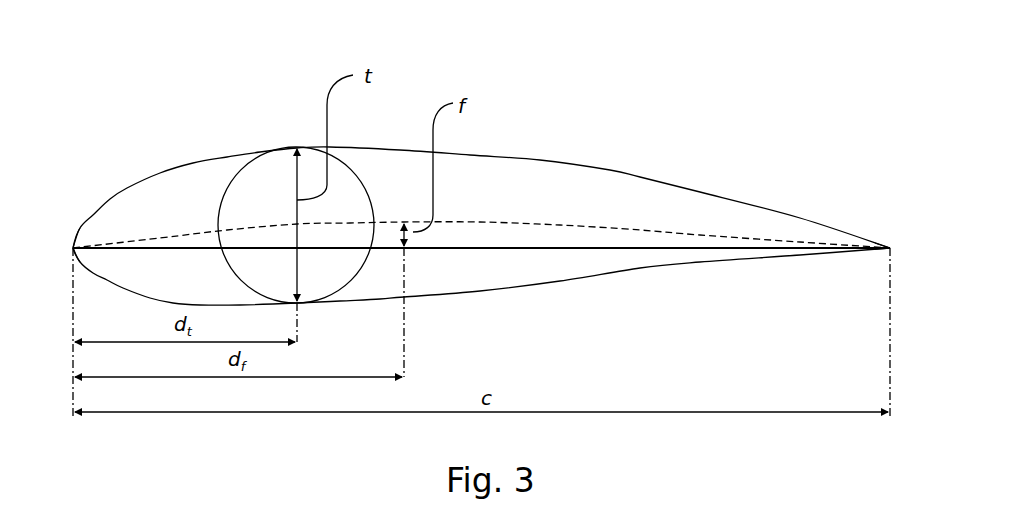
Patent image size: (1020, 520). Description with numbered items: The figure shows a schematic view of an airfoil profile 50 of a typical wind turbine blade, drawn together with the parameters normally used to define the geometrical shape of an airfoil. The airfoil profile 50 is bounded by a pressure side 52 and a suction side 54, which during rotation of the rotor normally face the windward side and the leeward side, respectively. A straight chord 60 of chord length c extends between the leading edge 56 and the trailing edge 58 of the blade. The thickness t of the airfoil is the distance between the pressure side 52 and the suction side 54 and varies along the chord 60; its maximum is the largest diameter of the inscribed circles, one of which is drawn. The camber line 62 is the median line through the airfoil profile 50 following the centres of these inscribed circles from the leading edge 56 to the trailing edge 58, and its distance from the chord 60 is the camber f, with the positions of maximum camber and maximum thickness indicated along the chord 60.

The airfoil profile 50 is at (456, 65).
The pressure side 52 is at (642, 277).
The suction side 54 is at (581, 165).
The leading edge 56 is at (73, 248).
The trailing edge 58 is at (890, 248).
The chord 60 is at (682, 248).
The camber line 62 is at (472, 222).